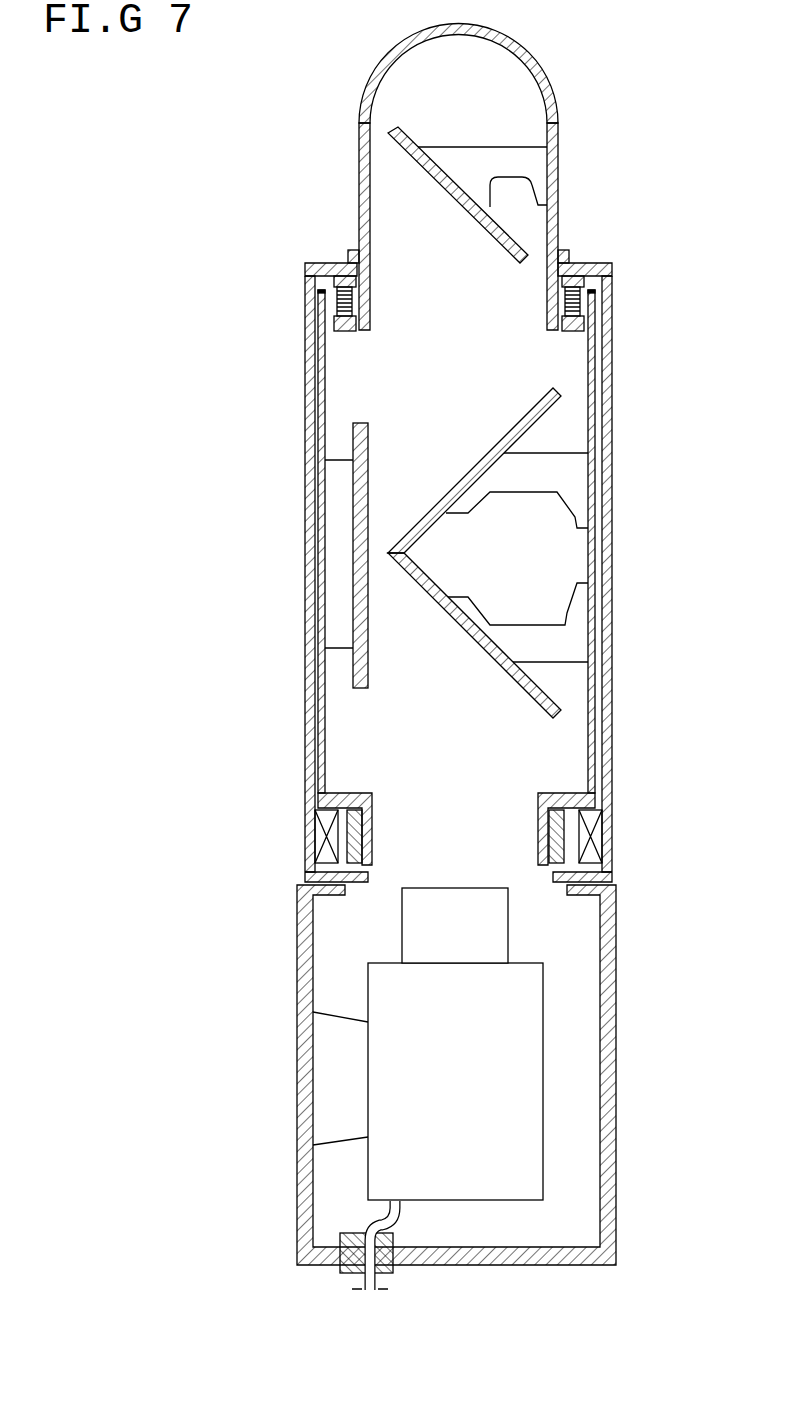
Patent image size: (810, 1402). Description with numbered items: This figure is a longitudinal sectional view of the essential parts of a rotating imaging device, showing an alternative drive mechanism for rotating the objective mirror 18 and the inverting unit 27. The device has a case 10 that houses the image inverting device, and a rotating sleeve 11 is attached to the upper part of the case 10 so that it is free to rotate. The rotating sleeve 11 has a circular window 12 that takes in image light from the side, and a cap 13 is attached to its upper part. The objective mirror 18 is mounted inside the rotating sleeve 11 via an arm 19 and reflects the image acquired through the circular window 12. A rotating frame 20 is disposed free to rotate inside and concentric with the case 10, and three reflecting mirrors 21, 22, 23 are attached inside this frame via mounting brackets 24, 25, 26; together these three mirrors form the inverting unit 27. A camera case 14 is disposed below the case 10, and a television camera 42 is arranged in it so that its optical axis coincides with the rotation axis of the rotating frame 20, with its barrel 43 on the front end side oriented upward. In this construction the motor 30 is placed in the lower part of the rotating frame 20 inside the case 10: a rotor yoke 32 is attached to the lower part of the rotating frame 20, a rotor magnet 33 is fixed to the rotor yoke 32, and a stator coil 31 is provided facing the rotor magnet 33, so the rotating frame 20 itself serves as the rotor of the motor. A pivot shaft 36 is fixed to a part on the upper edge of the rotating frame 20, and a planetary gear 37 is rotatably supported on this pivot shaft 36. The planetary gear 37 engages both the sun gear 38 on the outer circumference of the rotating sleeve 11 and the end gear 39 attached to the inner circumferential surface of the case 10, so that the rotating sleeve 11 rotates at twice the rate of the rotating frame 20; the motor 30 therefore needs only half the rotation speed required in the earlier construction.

The case 10 is at (466, 453).
The rotating sleeve 11 is at (558, 194).
The circular window 12 is at (358, 225).
The cap 13 is at (547, 76).
The camera case 14 is at (616, 1093).
The objective mirror 18 is at (455, 190).
The arm 19 is at (495, 160).
The rotating frame 20 is at (603, 495).
The reflecting mirror 21 is at (483, 440).
The reflecting mirror 22 is at (353, 542).
The reflecting mirror 23 is at (485, 660).
The mounting bracket 24 is at (525, 482).
The mounting bracket 25 is at (333, 497).
The mounting bracket 26 is at (530, 637).
The inverting unit 27 is at (555, 546).
The motor 30 is at (481, 785).
The stator coil 31 is at (320, 835).
The rotor yoke 32 is at (368, 841).
The rotor magnet 33 is at (372, 820).
The pivot shaft 36 is at (320, 298).
The planetary gear 37 is at (348, 292).
The sun gear 38 is at (345, 328).
The end gear 39 is at (336, 262).
The television camera 42 is at (523, 1028).
The barrel 43 is at (490, 923).